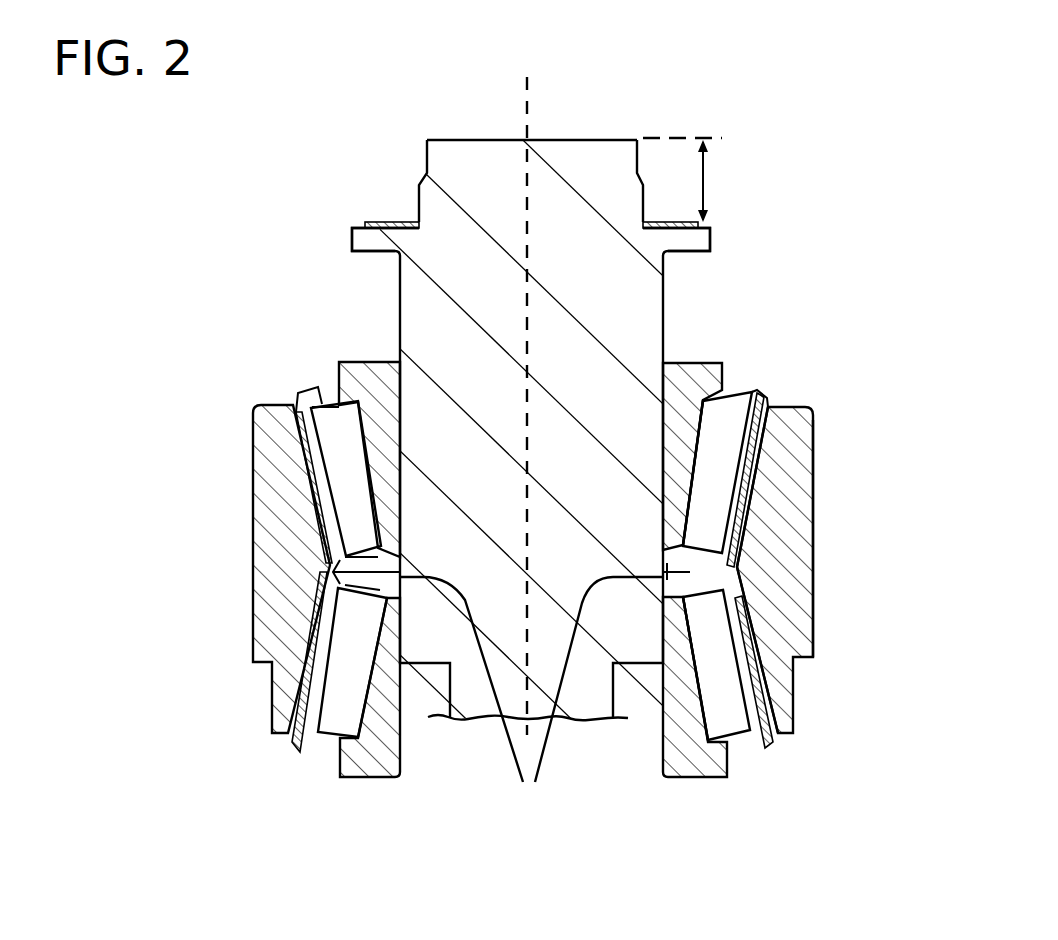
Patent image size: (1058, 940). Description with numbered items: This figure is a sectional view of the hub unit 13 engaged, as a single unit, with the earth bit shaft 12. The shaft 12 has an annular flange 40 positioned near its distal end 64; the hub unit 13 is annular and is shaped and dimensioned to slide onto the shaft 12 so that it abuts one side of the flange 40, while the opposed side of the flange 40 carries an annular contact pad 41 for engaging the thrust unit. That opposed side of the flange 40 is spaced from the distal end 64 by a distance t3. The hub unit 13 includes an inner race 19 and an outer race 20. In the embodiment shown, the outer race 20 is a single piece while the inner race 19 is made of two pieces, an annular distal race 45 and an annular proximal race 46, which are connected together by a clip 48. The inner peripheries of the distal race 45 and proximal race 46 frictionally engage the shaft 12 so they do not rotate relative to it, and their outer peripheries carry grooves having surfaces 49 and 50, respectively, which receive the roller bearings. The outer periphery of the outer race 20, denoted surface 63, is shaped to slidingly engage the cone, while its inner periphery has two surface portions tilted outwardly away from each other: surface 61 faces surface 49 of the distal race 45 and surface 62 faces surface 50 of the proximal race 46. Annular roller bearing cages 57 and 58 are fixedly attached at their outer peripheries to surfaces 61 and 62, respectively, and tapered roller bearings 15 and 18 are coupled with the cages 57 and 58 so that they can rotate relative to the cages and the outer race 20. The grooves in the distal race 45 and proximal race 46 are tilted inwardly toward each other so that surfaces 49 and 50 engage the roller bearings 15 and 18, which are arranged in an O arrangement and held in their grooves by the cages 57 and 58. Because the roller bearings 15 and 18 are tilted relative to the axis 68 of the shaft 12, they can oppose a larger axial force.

The shaft 12 is at (502, 309).
The hub unit 13 is at (608, 604).
The tapered roller bearing 15 is at (723, 417).
The tapered roller bearing 18 is at (728, 718).
The inner race 19 is at (753, 424).
The outer race 20 is at (596, 569).
The annular flange 40 is at (365, 238).
The annular contact pad 41 is at (378, 218).
The distal race 45 is at (705, 370).
The proximal race 46 is at (683, 765).
The clip 48 is at (531, 701).
The groove surface 49 is at (683, 467).
The groove surface 50 is at (696, 720).
The roller bearing cage 57 is at (760, 395).
The roller bearing cage 58 is at (772, 752).
The inner surface portion of outer race 61 is at (760, 500).
The inner surface portion of outer race 62 is at (763, 647).
The outer periphery surface 63 is at (816, 552).
The distal end 64 is at (616, 110).
The axis 68 is at (525, 106).
The distance t3 is at (705, 180).